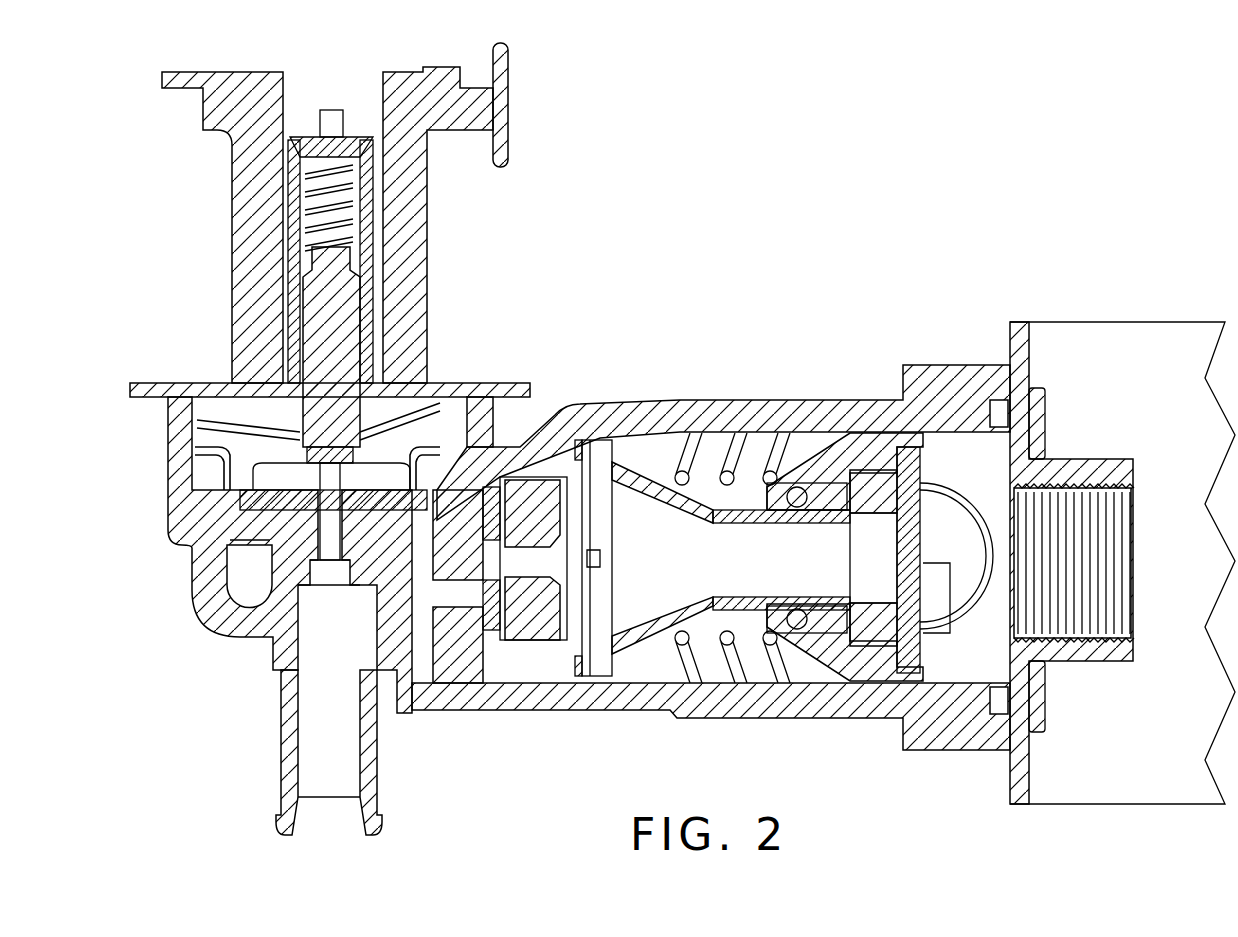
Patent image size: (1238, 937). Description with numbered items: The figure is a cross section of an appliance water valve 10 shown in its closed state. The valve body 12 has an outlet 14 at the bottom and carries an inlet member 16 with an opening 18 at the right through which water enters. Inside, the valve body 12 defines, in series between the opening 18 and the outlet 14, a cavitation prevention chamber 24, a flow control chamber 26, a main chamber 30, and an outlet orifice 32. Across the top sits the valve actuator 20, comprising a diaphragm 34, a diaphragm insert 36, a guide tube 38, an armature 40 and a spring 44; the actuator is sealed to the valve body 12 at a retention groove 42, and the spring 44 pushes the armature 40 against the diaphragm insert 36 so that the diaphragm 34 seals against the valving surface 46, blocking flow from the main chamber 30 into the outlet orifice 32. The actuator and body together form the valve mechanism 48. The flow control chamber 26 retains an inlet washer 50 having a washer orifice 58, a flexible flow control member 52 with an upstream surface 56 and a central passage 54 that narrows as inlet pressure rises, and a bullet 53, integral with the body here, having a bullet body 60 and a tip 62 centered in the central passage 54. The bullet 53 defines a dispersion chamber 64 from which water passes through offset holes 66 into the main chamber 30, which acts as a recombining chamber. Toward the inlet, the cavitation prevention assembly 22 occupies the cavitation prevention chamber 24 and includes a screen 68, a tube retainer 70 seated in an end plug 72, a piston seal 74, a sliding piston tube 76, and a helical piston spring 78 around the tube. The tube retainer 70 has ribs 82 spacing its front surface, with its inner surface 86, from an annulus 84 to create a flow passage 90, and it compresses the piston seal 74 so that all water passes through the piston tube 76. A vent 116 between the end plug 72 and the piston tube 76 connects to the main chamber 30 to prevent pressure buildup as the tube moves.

The appliance water valve 10 is at (820, 218).
The valve body 12 is at (188, 510).
The outlet 14 is at (332, 778).
The inlet member 16 is at (1085, 660).
The opening 18 is at (1108, 595).
The valve actuator 20 is at (196, 254).
The cavitation prevention assembly 22 is at (933, 775).
The cavitation prevention chamber 24 is at (740, 665).
The flow control chamber 26 is at (640, 650).
The main chamber 30 is at (253, 593).
The outlet orifice 32 is at (303, 533).
The diaphragm 34 is at (215, 428).
The diaphragm insert 36 is at (350, 695).
The guide tube 38 is at (438, 403).
The armature 40 is at (318, 274).
The retention groove 42 is at (452, 472).
The spring 44 is at (332, 182).
The valving surface 46 is at (273, 538).
The valve mechanism 48 is at (170, 637).
The inlet washer 50 is at (545, 640).
The flow control member 52 is at (595, 640).
The bullet 53 is at (478, 612).
The central passage 54 is at (623, 458).
The upstream surface 56 is at (592, 460).
The washer orifice 58 is at (565, 650).
The bullet body 60 is at (512, 662).
The tip 62 is at (550, 460).
The dispersion chamber 64 is at (483, 667).
The holes 66 is at (440, 665).
The screen 68 is at (988, 468).
The tube retainer 70 is at (935, 465).
The end plug 72 is at (842, 455).
The piston seal 74 is at (800, 490).
The piston tube 76 is at (760, 510).
The piston spring 78 is at (728, 470).
The ribs 82 is at (872, 610).
The annulus 84 is at (820, 690).
The inner surface 86 is at (947, 573).
The flow passage 90 is at (910, 447).
The vent 116 is at (705, 668).